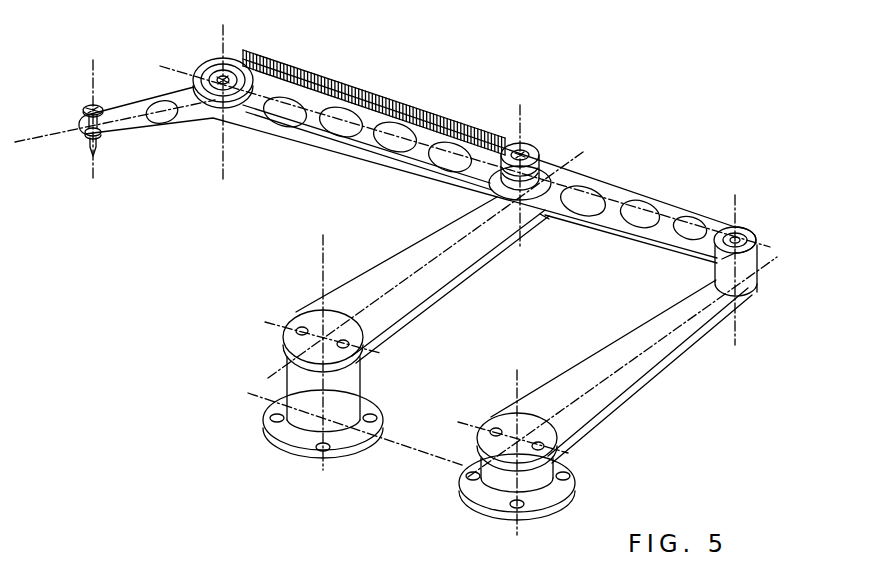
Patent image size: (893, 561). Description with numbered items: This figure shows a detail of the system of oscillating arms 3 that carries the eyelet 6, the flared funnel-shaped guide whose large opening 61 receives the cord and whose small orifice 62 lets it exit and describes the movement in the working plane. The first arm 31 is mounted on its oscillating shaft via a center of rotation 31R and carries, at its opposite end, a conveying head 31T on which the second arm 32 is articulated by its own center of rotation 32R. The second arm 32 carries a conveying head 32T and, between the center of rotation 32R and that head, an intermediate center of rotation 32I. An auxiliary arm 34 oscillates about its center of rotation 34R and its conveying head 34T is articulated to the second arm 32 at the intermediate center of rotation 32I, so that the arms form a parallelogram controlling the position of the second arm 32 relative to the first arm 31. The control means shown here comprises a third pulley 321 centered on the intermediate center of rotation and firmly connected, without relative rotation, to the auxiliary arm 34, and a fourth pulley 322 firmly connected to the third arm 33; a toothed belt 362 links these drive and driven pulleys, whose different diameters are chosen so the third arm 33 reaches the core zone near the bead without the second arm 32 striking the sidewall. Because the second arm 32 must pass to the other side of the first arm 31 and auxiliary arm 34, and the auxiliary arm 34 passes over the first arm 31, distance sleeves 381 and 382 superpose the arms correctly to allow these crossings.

The system of oscillating arms 3 is at (422, 466).
The eyelet 6 is at (84, 136).
The large opening 61 is at (88, 105).
The small orifice 62 is at (86, 152).
The first arm 31 is at (658, 352).
The center of rotation of the first arm 31R is at (560, 440).
The conveying head of the first arm 31T is at (752, 292).
The second arm 32 is at (623, 193).
The intermediate center of rotation of the second arm 32I is at (518, 108).
The center of rotation of the second arm 32R is at (735, 202).
The conveying head of the second arm 32T is at (222, 132).
The third pulley 321 is at (530, 135).
The fourth pulley 322 is at (253, 55).
The third arm 33 is at (127, 107).
The auxiliary arm 34 is at (433, 238).
The center of rotation of the auxiliary arm 34R is at (365, 340).
The conveying head of the auxiliary arm 34T is at (538, 235).
The toothed belt 362 is at (390, 102).
The distance sleeve 381 is at (278, 395).
The distance sleeve 382 is at (757, 263).